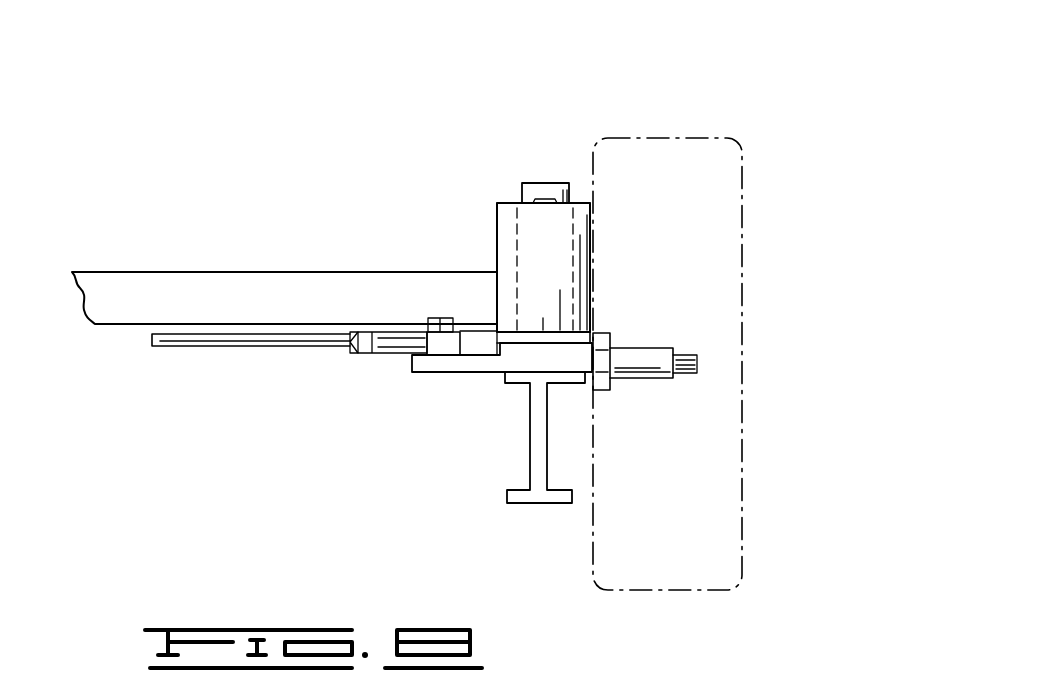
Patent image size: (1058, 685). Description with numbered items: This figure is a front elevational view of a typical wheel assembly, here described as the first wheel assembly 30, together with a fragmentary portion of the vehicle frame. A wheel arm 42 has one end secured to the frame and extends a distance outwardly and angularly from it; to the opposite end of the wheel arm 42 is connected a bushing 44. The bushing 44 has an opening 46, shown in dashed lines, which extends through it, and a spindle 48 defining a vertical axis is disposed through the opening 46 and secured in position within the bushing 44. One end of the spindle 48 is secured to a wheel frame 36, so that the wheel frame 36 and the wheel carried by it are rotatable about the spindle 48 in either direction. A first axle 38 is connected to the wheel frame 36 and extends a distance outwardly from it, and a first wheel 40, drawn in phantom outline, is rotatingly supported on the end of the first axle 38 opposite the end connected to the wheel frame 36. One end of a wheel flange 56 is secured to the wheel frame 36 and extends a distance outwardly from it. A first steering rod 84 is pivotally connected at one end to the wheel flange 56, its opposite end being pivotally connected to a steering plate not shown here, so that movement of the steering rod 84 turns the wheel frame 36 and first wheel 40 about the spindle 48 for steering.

The first wheel assembly 30 is at (538, 136).
The wheel arm 42 is at (218, 287).
The first steering rod 84 is at (230, 345).
The wheel flange 56 is at (444, 362).
The wheel frame 36 is at (518, 349).
The bushing 44 is at (497, 220).
The opening 46 is at (515, 258).
The spindle 48 is at (540, 185).
The first axle 38 is at (663, 343).
The first wheel 40 is at (742, 427).